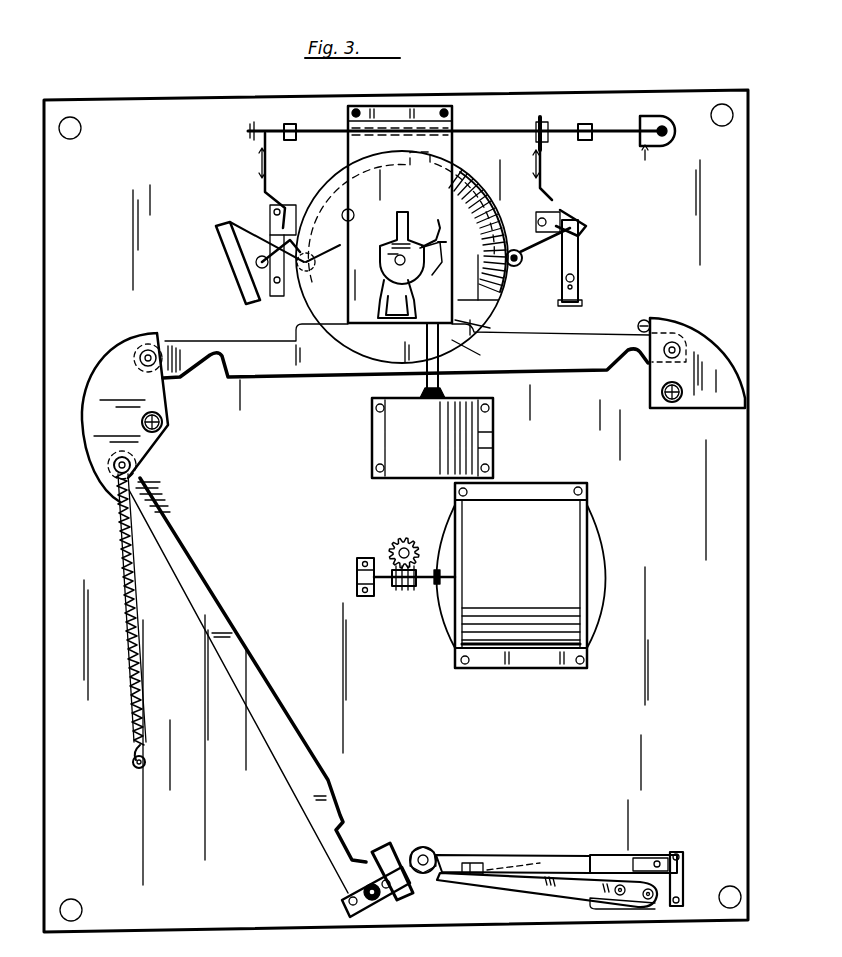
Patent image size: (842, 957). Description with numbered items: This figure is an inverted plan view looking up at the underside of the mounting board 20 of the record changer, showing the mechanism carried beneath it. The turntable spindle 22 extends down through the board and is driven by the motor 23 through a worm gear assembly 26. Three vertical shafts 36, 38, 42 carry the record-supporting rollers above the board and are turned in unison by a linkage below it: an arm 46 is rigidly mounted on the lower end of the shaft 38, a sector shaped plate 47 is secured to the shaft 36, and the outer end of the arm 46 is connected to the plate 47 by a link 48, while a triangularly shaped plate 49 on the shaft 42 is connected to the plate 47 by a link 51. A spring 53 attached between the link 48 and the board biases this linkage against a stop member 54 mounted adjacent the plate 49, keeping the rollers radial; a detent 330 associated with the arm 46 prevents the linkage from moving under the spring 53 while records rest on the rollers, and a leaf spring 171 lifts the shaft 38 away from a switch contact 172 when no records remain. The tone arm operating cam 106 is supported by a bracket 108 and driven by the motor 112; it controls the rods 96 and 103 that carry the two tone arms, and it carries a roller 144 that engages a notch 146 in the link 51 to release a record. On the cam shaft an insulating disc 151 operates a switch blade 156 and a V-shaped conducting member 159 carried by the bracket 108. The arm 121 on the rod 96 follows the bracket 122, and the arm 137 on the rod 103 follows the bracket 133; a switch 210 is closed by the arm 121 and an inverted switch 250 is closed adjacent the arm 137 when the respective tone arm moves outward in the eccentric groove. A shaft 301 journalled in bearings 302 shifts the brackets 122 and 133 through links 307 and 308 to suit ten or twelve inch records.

The mounting board 20 is at (132, 186).
The spindle 22 is at (404, 540).
The motor 23 is at (575, 528).
The worm gear assembly 26 is at (400, 590).
The shaft 36 is at (170, 426).
The shaft 38 is at (434, 852).
The shaft 42 is at (672, 404).
The arm 46 is at (346, 896).
The sector shaped plate 47 is at (108, 372).
The link 48 is at (278, 705).
The triangularly shaped plate 49 is at (702, 340).
The link 51 is at (568, 370).
The spring 53 is at (130, 586).
The stop member 54 is at (642, 322).
The rod 96 is at (514, 266).
The rod 103 is at (318, 251).
The cam 106 is at (478, 182).
The bracket 108 is at (455, 138).
The motor 112 is at (410, 452).
The arm 121 is at (536, 222).
The bracket 122 is at (584, 233).
The bracket 133 is at (287, 212).
The arm 137 is at (282, 245).
The roller 144 is at (350, 208).
The notch 146 is at (318, 300).
The disc 151 is at (432, 240).
The switch blade 156 is at (400, 212).
The conducting member 159 is at (386, 299).
The leaf spring 171 is at (572, 886).
The switch contact 172 is at (550, 858).
The switch 210 is at (580, 266).
The switch 250 is at (230, 258).
The shaft 301 is at (545, 124).
The bearings 302 is at (298, 113).
The link 307 is at (548, 165).
The link 308 is at (262, 166).
The detent 330 is at (398, 838).